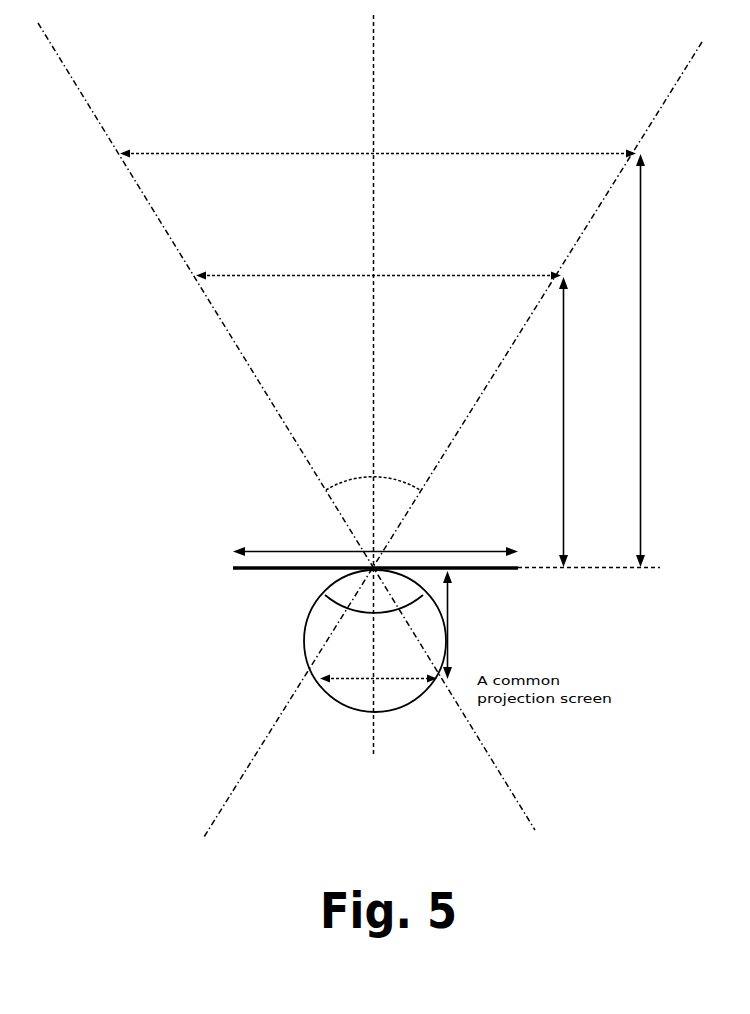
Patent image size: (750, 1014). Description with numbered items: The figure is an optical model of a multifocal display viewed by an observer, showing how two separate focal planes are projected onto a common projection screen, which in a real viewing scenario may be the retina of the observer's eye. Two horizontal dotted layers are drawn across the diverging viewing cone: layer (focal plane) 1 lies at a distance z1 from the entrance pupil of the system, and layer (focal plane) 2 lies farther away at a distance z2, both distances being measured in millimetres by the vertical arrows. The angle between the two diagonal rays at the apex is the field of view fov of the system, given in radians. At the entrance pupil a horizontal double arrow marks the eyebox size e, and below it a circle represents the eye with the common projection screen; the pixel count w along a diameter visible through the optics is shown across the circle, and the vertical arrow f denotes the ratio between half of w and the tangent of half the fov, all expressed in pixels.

The layer (focal plane) 1 is at (378, 260).
The layer (focal plane) 2 is at (378, 138).
The distance between layer 1 and entrance pupil z1 is at (581, 422).
The distance between layer 2 and entrance pupil z2 is at (677, 360).
The eyebox size e is at (375, 535).
The ratio between half width of the sensor and tangent of half fov f is at (461, 625).
The number of pixels along a diameter visible through the optical system w is at (378, 661).
The field of view of the system fov is at (370, 464).